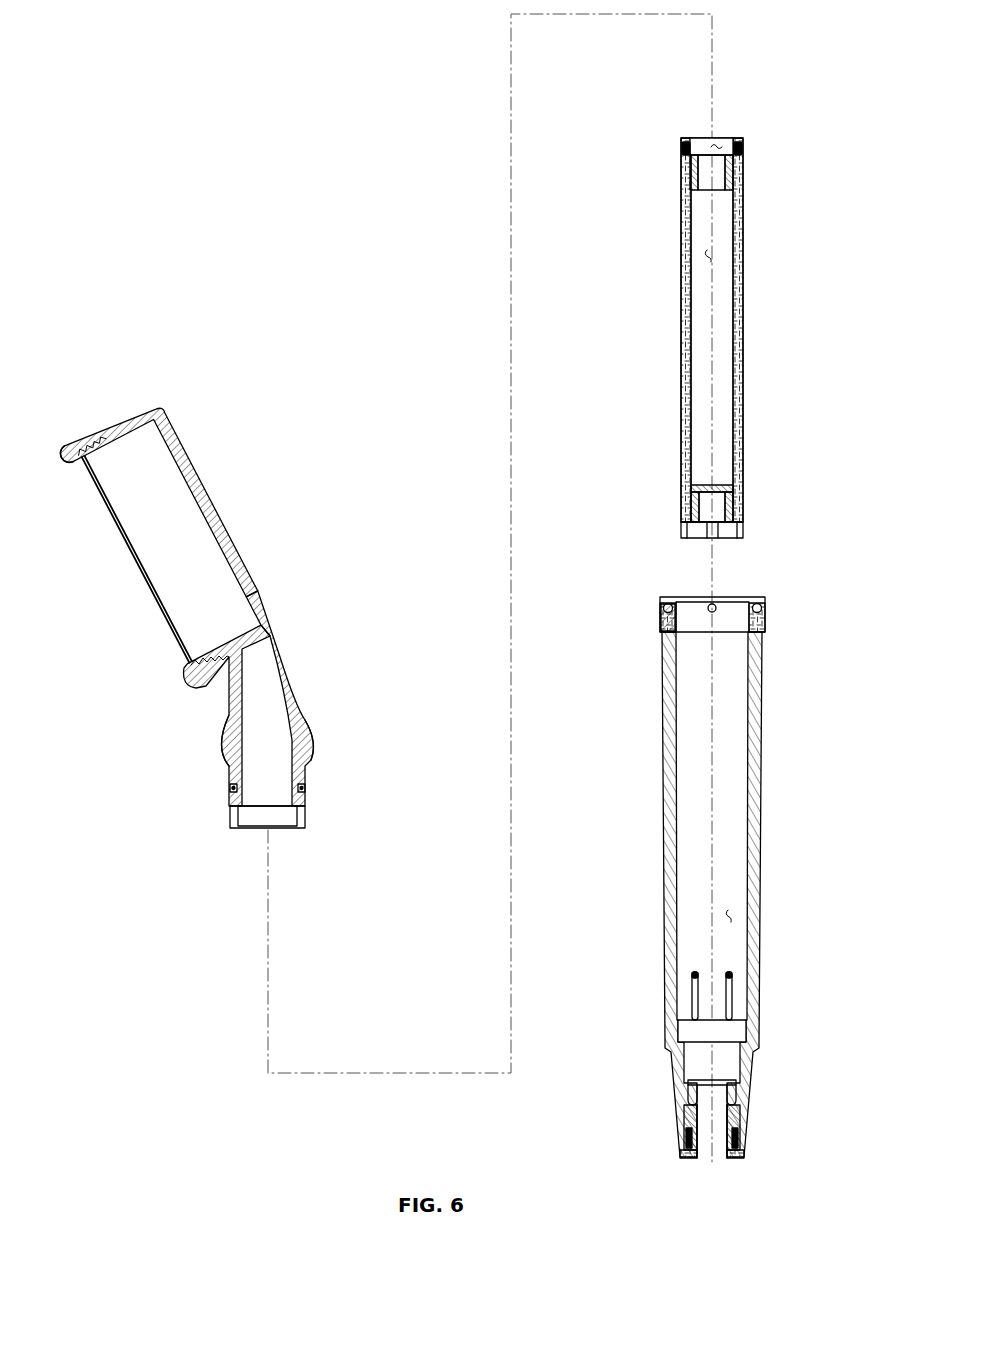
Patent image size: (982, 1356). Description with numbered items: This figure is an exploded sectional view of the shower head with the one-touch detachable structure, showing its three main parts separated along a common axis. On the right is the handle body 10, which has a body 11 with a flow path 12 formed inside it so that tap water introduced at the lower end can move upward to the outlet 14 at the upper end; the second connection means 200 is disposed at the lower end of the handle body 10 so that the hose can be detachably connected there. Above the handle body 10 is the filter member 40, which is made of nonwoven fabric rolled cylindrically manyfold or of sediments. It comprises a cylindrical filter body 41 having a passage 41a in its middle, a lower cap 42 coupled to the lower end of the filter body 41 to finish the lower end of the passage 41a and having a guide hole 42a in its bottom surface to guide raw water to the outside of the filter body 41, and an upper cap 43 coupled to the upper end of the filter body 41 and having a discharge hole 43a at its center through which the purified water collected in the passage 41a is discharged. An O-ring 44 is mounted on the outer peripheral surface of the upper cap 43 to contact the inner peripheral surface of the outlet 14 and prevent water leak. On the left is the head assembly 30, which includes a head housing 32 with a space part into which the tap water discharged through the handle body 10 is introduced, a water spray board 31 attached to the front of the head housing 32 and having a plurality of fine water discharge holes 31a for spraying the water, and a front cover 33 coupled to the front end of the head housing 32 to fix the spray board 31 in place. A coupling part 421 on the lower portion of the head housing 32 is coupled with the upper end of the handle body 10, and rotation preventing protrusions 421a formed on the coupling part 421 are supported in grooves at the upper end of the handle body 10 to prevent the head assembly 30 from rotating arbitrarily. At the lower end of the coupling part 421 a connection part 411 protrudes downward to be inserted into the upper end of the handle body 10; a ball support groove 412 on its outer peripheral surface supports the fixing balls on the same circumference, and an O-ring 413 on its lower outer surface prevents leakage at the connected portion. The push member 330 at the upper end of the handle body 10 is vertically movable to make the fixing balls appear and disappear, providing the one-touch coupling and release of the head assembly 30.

The handle body 10 is at (716, 831).
The body 11 is at (757, 700).
The flow path 12 is at (732, 913).
The outlet 14 is at (743, 597).
The head assembly 30 is at (243, 557).
The water spray board 31 is at (122, 559).
The fine water discharge holes 31a is at (155, 612).
The head housing 32 is at (141, 426).
The front cover 33 is at (77, 447).
The filter member 40 is at (716, 329).
The filter body 41 is at (753, 330).
The passage 41a is at (714, 254).
The lower cap 42 is at (737, 488).
The guide hole 42a is at (742, 533).
The upper cap 43 is at (700, 151).
The discharge hole 43a is at (723, 146).
The O-ring 44 is at (682, 148).
The second connection means 200 is at (665, 1095).
The push member 330 is at (645, 570).
The connection part 411 is at (230, 812).
The ball support groove 412 is at (305, 787).
The O-ring 413 is at (230, 788).
The coupling part 421 is at (277, 698).
The rotation preventing protrusions 421a is at (261, 752).